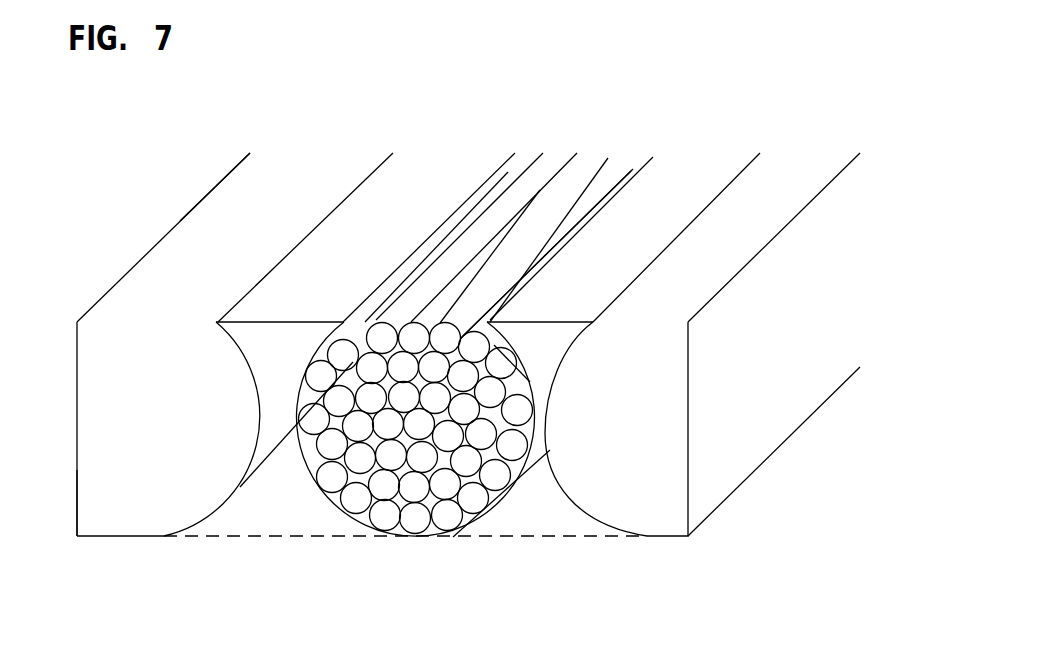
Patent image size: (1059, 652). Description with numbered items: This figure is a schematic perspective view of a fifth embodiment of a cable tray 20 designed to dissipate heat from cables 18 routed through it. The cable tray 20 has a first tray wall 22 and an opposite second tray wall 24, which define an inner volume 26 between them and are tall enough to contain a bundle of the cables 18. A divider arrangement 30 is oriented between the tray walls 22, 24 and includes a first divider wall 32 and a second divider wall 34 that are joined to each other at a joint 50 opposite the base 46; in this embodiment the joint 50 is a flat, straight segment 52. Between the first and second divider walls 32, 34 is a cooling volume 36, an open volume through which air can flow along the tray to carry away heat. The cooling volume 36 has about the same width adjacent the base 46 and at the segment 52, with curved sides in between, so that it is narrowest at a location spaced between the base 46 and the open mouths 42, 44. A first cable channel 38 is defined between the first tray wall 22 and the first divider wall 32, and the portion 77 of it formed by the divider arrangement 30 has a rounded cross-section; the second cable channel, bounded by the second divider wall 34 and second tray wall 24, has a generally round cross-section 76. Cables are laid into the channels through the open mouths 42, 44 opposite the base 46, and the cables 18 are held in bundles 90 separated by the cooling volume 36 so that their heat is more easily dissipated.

The cables 18 is at (540, 206).
The cable tray 20 is at (866, 168).
The first tray wall 22 is at (77, 443).
The second tray wall 24 is at (747, 453).
The inner volume 26 is at (153, 256).
The divider arrangement 30 is at (272, 268).
The first divider wall 32 is at (245, 477).
The second divider wall 34 is at (312, 477).
The cooling volume 36 is at (281, 483).
The first cable channel 38 is at (78, 502).
The open mouth 42 is at (198, 208).
The open mouth 44 is at (455, 220).
The base 46 is at (611, 538).
The joint 50 is at (387, 217).
The flat, straight segment 52 is at (318, 279).
The round cross-section 76 is at (373, 527).
The portion 77 is at (262, 400).
The bundles 90 is at (415, 524).